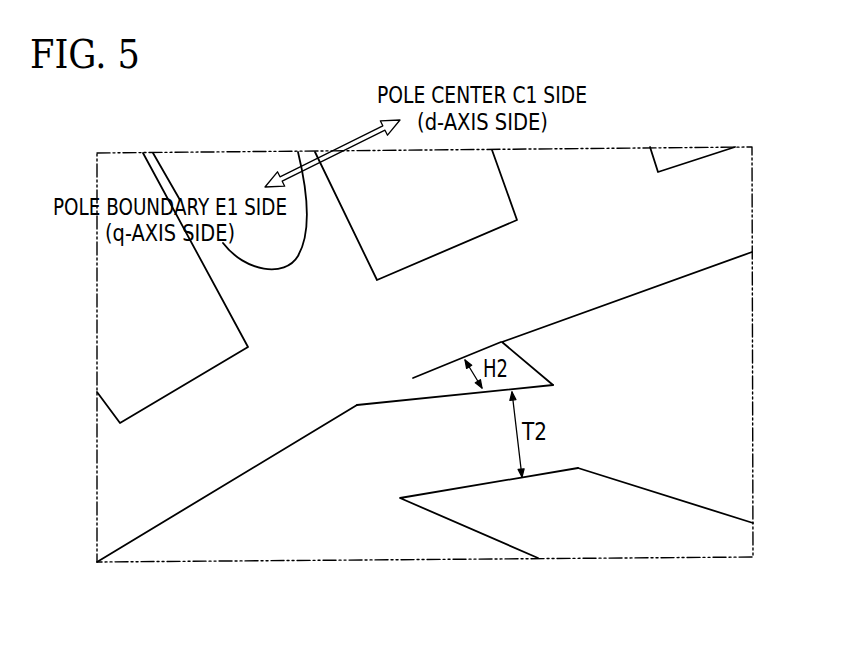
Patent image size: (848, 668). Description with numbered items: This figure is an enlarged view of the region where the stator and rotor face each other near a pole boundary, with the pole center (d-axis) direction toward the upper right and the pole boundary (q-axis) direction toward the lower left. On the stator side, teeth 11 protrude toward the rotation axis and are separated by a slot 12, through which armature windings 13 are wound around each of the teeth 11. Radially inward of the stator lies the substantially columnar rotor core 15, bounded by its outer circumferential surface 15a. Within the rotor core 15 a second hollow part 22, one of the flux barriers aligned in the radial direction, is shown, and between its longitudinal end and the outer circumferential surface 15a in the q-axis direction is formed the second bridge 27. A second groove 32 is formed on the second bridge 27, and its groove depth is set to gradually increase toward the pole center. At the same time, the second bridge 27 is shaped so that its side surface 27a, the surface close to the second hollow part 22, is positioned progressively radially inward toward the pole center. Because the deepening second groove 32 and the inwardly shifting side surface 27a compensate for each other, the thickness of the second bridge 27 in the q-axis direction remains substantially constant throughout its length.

The teeth 11 is at (160, 375).
The slot 12 is at (233, 315).
The armature winding 13 is at (287, 247).
The rotor core 15 is at (352, 520).
The outer circumferential surface of rotor core 15a is at (569, 312).
The second hollow part 22 is at (678, 499).
The second bridge 27 is at (392, 423).
The side surface 27a is at (492, 483).
The second groove 32 is at (407, 400).